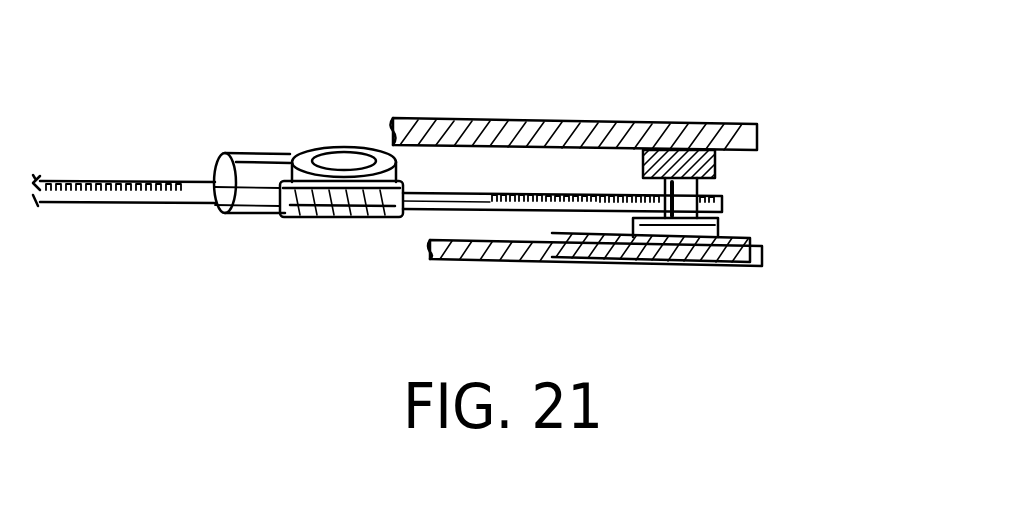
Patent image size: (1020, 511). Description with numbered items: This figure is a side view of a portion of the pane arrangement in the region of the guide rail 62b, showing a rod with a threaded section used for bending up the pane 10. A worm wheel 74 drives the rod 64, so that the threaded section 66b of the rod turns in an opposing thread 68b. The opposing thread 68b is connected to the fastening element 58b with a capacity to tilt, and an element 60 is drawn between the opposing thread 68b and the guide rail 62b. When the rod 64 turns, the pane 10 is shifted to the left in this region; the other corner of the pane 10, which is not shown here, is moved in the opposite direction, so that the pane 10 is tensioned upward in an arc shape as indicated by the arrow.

The pane 10 is at (540, 119).
The fastening element 58b is at (688, 150).
The opposing thread 68b is at (706, 192).
The bracket 60 is at (722, 226).
The guide rail 62b is at (692, 266).
The threaded section 66b is at (522, 216).
The rod 64 is at (250, 192).
The worm wheel 74 is at (343, 160).